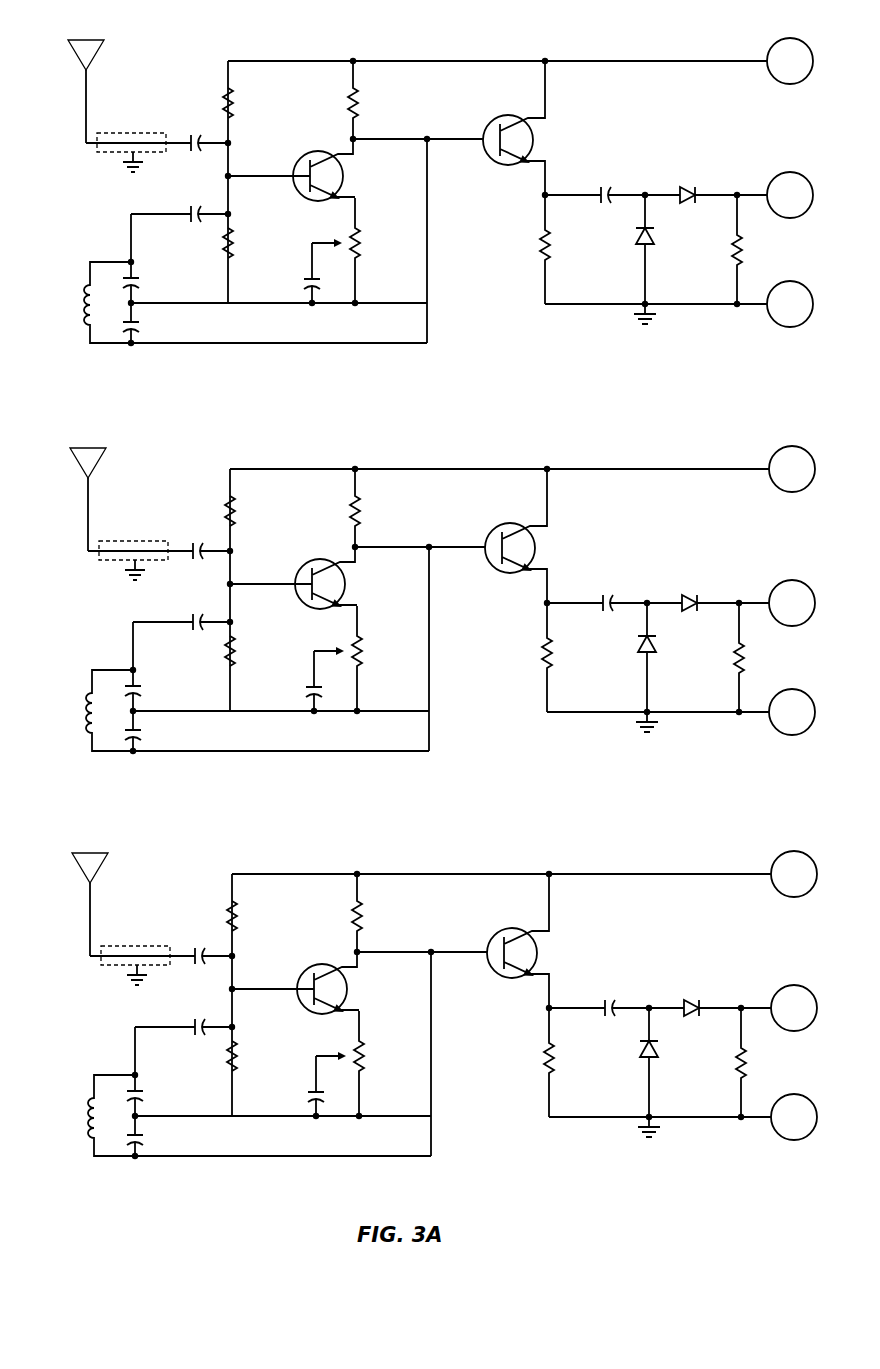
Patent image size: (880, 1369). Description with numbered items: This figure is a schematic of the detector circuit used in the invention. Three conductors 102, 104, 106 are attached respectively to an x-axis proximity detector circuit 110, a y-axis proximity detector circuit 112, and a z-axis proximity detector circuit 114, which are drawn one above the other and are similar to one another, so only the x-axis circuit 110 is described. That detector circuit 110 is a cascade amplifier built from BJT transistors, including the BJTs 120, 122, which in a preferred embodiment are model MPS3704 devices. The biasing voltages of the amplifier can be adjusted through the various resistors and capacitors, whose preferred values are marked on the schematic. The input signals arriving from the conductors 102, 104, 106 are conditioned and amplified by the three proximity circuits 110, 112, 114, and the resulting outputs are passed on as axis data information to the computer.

The conductor 102 is at (90, 38).
The conductor 104 is at (155, 479).
The conductor 106 is at (157, 884).
The x-axis proximity detector circuit 110 is at (627, 37).
The y-axis proximity detector circuit 112 is at (422, 599).
The z-axis proximity detector circuit 114 is at (424, 1004).
The BJT 120 is at (297, 197).
The BJT 122 is at (533, 147).